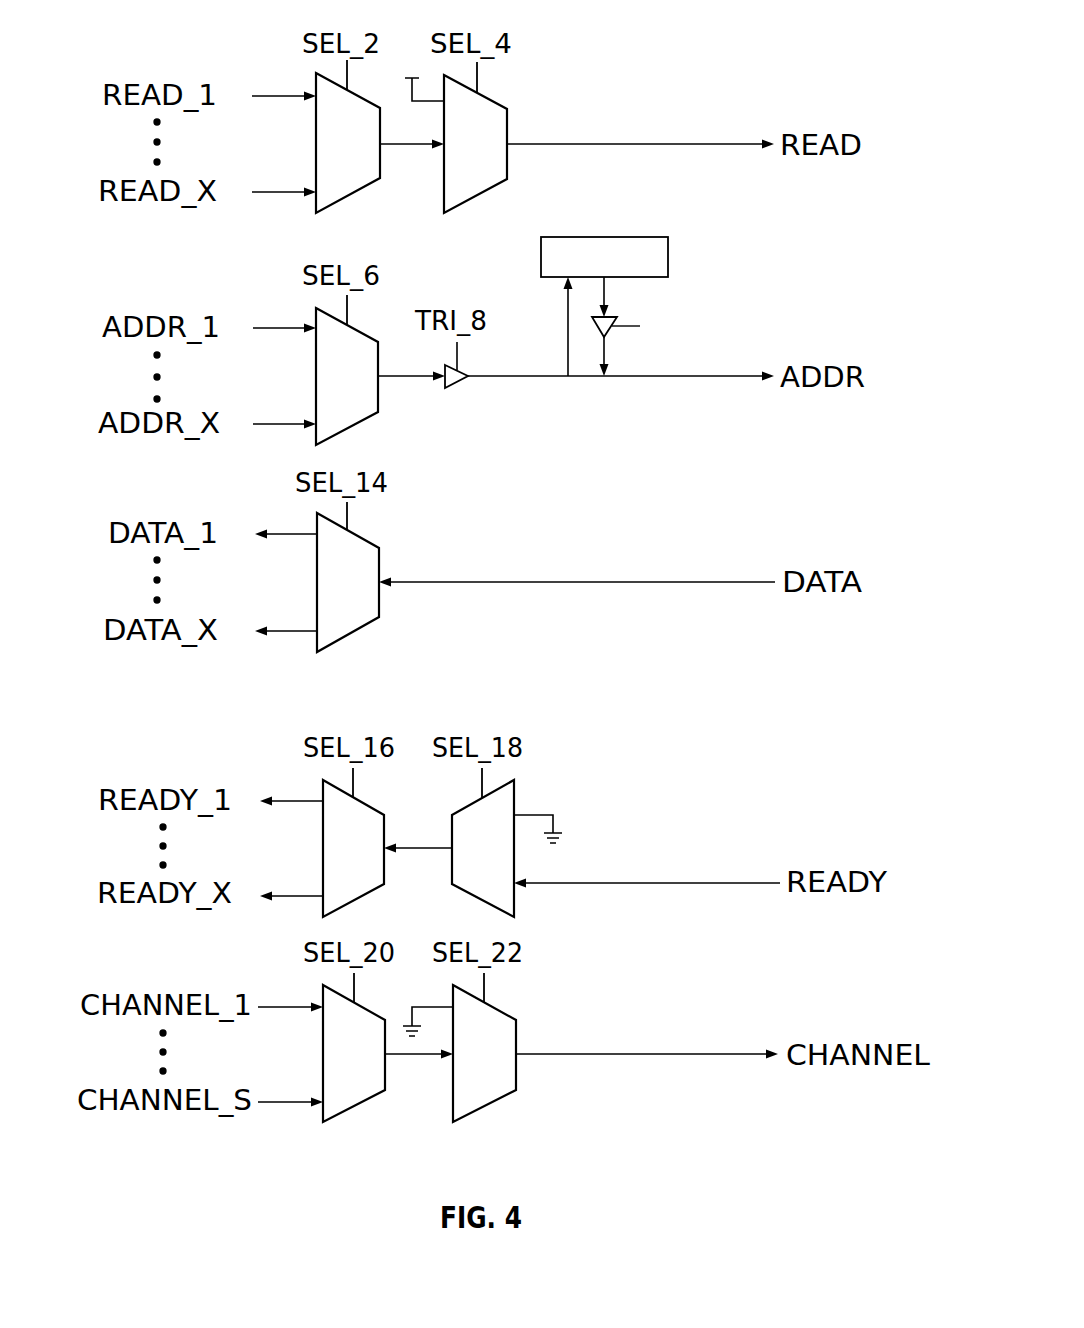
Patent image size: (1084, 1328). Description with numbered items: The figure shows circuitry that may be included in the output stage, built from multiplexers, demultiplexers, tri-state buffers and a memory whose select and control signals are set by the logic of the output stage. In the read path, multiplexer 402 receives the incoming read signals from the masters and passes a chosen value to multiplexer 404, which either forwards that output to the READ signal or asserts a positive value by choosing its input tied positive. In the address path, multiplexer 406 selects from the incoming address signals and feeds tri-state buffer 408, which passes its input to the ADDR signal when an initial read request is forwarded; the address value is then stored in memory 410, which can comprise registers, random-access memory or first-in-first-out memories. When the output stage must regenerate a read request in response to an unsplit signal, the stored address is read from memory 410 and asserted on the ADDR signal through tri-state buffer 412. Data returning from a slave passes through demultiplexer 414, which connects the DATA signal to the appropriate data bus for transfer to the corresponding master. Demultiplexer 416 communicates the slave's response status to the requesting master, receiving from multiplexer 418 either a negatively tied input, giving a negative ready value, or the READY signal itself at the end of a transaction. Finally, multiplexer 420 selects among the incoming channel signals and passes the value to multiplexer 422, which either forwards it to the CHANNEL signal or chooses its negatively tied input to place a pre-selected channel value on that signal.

The multiplexer 402 is at (350, 197).
The multiplexer 404 is at (478, 197).
The multiplexer 406 is at (350, 428).
The tri-state buffer 408 is at (455, 385).
The memory 410 is at (603, 237).
The tri-state buffer 412 is at (610, 315).
The demultiplexer 414 is at (350, 635).
The demultiplexer 416 is at (355, 900).
The multiplexer 418 is at (505, 906).
The multiplexer 420 is at (356, 1105).
The multiplexer 422 is at (487, 1105).